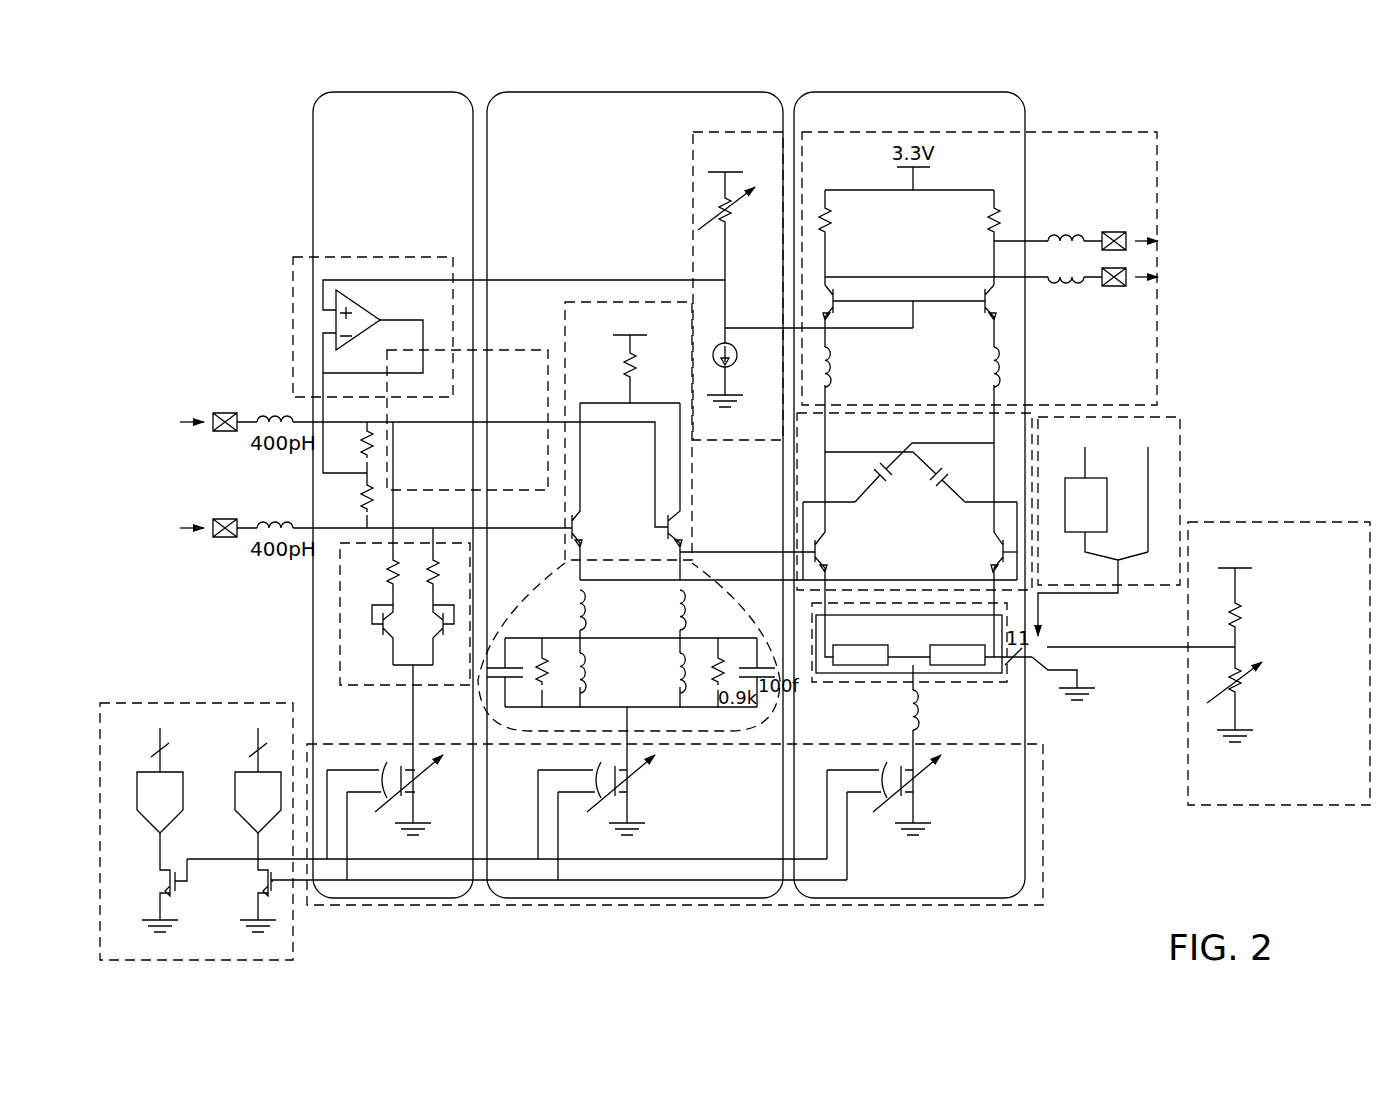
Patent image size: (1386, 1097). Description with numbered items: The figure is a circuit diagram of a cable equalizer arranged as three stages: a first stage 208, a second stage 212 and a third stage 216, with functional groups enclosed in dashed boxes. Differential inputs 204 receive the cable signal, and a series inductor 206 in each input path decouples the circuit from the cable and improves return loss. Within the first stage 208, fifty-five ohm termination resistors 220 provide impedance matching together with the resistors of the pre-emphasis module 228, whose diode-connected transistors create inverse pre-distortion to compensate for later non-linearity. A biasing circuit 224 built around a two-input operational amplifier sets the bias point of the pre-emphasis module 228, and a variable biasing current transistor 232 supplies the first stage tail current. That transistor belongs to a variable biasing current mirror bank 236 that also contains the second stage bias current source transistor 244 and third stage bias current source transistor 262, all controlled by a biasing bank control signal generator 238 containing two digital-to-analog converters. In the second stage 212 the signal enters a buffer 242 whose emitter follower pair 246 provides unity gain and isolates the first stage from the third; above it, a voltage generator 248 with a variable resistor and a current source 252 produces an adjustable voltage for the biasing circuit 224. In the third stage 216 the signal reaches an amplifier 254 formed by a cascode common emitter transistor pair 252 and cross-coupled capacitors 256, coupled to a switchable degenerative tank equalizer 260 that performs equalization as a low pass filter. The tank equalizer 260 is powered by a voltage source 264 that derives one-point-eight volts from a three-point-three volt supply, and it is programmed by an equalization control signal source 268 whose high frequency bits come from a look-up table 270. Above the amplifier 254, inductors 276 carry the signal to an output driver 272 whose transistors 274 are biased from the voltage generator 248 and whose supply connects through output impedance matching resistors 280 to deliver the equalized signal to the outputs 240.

The inputs 204 is at (208, 518).
The inductor 206 is at (262, 520).
The first stage 208 is at (400, 92).
The second stage 212 is at (630, 92).
The third stage 216 is at (925, 92).
The impedance matching resistors 220 is at (368, 498).
The biasing circuit 224 is at (293, 257).
The pre-emphasis module 228 is at (340, 640).
The variable biasing current transistor 232 is at (400, 800).
The variable biasing current mirror bank 236 is at (612, 905).
The biasing bank control signal generator 238 is at (293, 938).
The outputs 240 is at (1128, 248).
The buffer 242 is at (565, 305).
The second stage bias current source transistor 244 is at (632, 805).
The emitter follower pair 246 is at (665, 536).
The voltage generator 248 is at (750, 132).
The current source 252 is at (748, 362).
The amplifier 254 is at (797, 480).
The cross-coupled capacitors 256 is at (944, 490).
The tank equalizer 260 is at (962, 682).
The third stage bias current source transistor 262 is at (918, 805).
The voltage source 264 is at (1290, 522).
The equalization control signal source 268 is at (1180, 417).
The look-up table 270 is at (1085, 540).
The output driver 272 is at (1115, 132).
The transistors 274 is at (975, 300).
The inductors 276 is at (1004, 366).
The output impedance matching resistors 280 is at (986, 222).